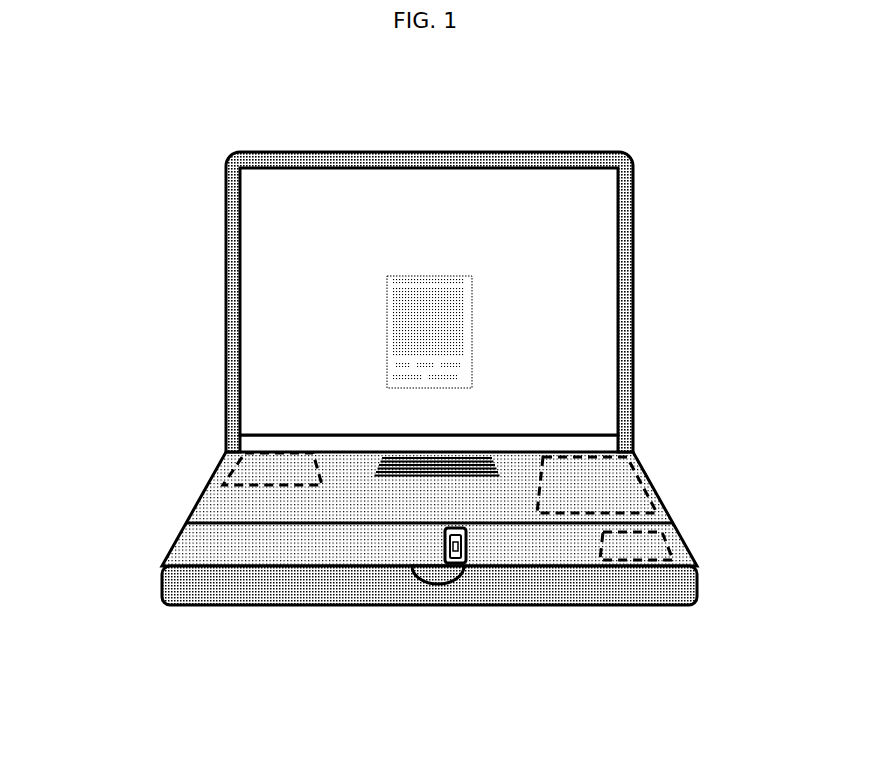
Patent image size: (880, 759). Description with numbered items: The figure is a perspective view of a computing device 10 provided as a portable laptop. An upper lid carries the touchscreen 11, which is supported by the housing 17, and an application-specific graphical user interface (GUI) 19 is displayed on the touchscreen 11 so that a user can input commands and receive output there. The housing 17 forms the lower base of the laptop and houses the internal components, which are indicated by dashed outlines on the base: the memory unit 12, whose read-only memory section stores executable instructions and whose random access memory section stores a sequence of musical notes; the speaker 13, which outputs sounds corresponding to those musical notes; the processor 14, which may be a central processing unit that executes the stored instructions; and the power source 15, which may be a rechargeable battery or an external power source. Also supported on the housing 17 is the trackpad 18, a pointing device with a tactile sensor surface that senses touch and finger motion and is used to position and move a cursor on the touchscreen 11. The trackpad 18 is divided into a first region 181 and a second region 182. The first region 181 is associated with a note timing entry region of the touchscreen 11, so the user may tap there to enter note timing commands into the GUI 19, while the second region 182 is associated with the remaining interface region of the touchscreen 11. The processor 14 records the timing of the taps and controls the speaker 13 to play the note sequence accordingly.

The computing device 10 is at (178, 135).
The touchscreen 11 is at (290, 230).
The memory unit 12 is at (602, 485).
The speaker 13 is at (458, 470).
The processor 14 is at (657, 542).
The power source 15 is at (290, 471).
The housing 17 is at (165, 590).
The trackpad 18 is at (405, 552).
The first region of the trackpad 181 is at (456, 566).
The second region of the trackpad 182 is at (468, 550).
The graphical user interface (GUI) 19 is at (447, 308).